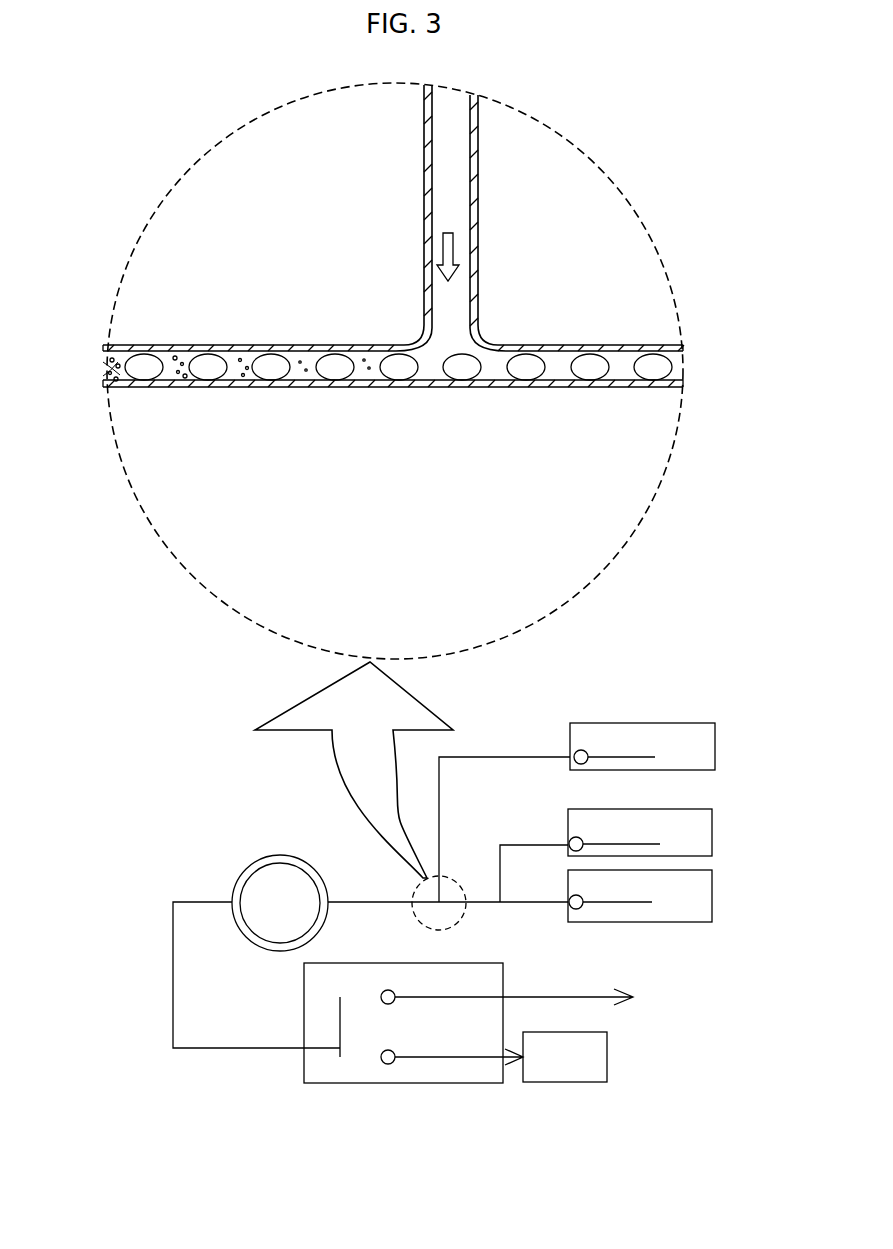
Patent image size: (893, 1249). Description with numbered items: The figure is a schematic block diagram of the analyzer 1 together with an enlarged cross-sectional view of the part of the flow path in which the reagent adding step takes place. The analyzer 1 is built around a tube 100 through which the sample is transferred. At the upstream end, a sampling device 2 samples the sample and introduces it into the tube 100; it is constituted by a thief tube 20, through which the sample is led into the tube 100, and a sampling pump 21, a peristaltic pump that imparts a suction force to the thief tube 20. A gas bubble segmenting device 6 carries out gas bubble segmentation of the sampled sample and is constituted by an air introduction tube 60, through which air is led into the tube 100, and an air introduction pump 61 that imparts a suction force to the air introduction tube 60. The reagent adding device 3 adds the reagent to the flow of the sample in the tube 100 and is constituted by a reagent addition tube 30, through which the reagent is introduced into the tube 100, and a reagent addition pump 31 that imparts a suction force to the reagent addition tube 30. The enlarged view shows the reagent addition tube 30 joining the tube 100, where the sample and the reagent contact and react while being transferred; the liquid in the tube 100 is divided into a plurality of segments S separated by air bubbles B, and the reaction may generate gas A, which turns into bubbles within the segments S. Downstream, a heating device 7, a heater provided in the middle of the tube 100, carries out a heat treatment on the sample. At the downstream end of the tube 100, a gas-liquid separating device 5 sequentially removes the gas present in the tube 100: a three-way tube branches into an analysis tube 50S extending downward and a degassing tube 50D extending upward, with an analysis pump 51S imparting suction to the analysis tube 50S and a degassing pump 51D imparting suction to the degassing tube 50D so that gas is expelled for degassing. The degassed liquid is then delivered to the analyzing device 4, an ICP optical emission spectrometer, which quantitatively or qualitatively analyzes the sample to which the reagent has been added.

The analyzer 1 is at (677, 636).
The tube 100 is at (112, 350).
The reagent addition tube 30 is at (478, 192).
The segments S is at (176, 362).
The air bubble B is at (143, 372).
The gas A is at (106, 370).
The heating device 7 is at (293, 861).
The reagent adding device 3 is at (715, 732).
The reagent addition pump 31 is at (588, 755).
The gas bubble segmenting device 6 is at (714, 818).
The air introduction pump 61 is at (583, 842).
The air introduction tube 60 is at (617, 844).
The sampling device 2 is at (714, 882).
The sampling pump 21 is at (583, 900).
The thief tube 20 is at (617, 902).
The gas-liquid separating device 5 is at (504, 974).
The degassing pump 51D is at (395, 994).
The degassing tube 50D is at (445, 997).
The analysis pump 51S is at (395, 1054).
The analysis tube 50S is at (443, 1057).
The analyzing device 4 is at (542, 1031).